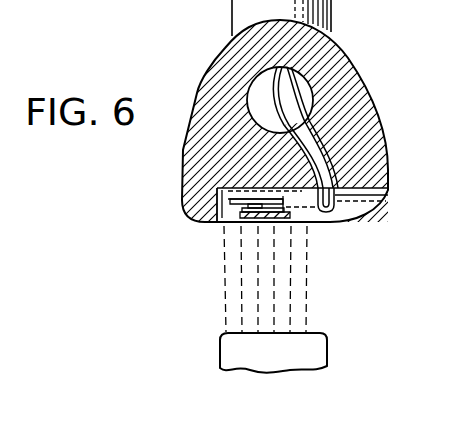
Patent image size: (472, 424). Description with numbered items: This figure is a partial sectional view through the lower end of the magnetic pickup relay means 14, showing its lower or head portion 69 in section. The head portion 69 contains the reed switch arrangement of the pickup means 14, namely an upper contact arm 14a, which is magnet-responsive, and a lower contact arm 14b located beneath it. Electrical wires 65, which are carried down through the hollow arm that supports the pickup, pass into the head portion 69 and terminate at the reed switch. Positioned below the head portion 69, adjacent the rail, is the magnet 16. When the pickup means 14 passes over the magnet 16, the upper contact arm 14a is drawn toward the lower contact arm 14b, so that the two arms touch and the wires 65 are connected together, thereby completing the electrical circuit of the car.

The magnetic pickup relay means 14 is at (333, 13).
The upper contact arm 14a is at (220, 187).
The lower contact arm 14b is at (265, 223).
The magnet 16 is at (290, 345).
The electrical wires 65 is at (295, 90).
The head portion 69 is at (362, 143).